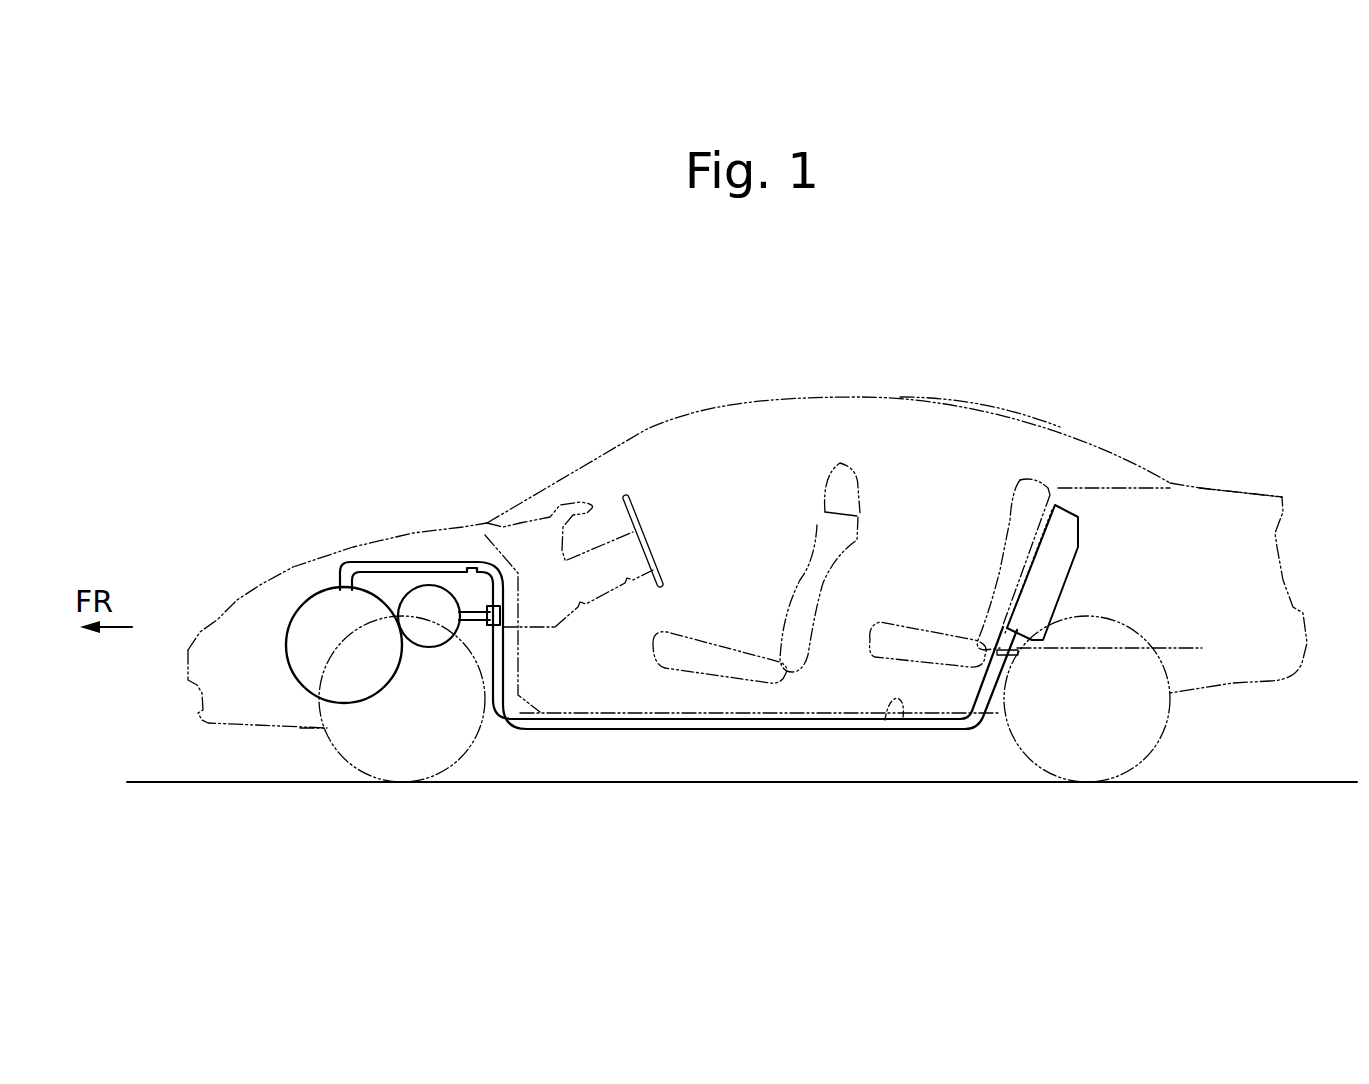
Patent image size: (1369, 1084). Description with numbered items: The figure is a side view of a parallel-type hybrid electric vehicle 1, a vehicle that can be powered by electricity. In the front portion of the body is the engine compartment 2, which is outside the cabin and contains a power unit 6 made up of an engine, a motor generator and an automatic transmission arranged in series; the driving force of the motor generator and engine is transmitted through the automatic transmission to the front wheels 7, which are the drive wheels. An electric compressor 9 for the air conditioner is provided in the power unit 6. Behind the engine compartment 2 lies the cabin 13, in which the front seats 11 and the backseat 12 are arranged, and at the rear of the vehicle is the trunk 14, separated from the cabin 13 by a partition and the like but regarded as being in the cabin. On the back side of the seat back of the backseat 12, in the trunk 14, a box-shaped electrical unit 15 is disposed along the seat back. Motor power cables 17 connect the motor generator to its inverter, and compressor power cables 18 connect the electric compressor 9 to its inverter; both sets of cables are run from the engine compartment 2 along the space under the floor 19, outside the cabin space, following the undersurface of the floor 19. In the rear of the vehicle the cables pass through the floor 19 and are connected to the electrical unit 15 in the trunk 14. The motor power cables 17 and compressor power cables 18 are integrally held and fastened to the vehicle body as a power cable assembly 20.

The hybrid electric vehicle 1 is at (909, 322).
The engine compartment 2 is at (272, 605).
The power unit 6 is at (324, 588).
The front wheels 7 is at (340, 752).
The electric compressor 9 is at (425, 585).
The front seats 11 is at (815, 523).
The backseat 12 is at (1015, 517).
The cabin 13 is at (975, 428).
The trunk 14 is at (1215, 513).
The electrical unit 15 is at (1078, 572).
The motor power cables 17 is at (762, 732).
The compressor power cables 18 is at (685, 714).
The floor 19 is at (890, 702).
The power cable assembly 20 is at (612, 732).